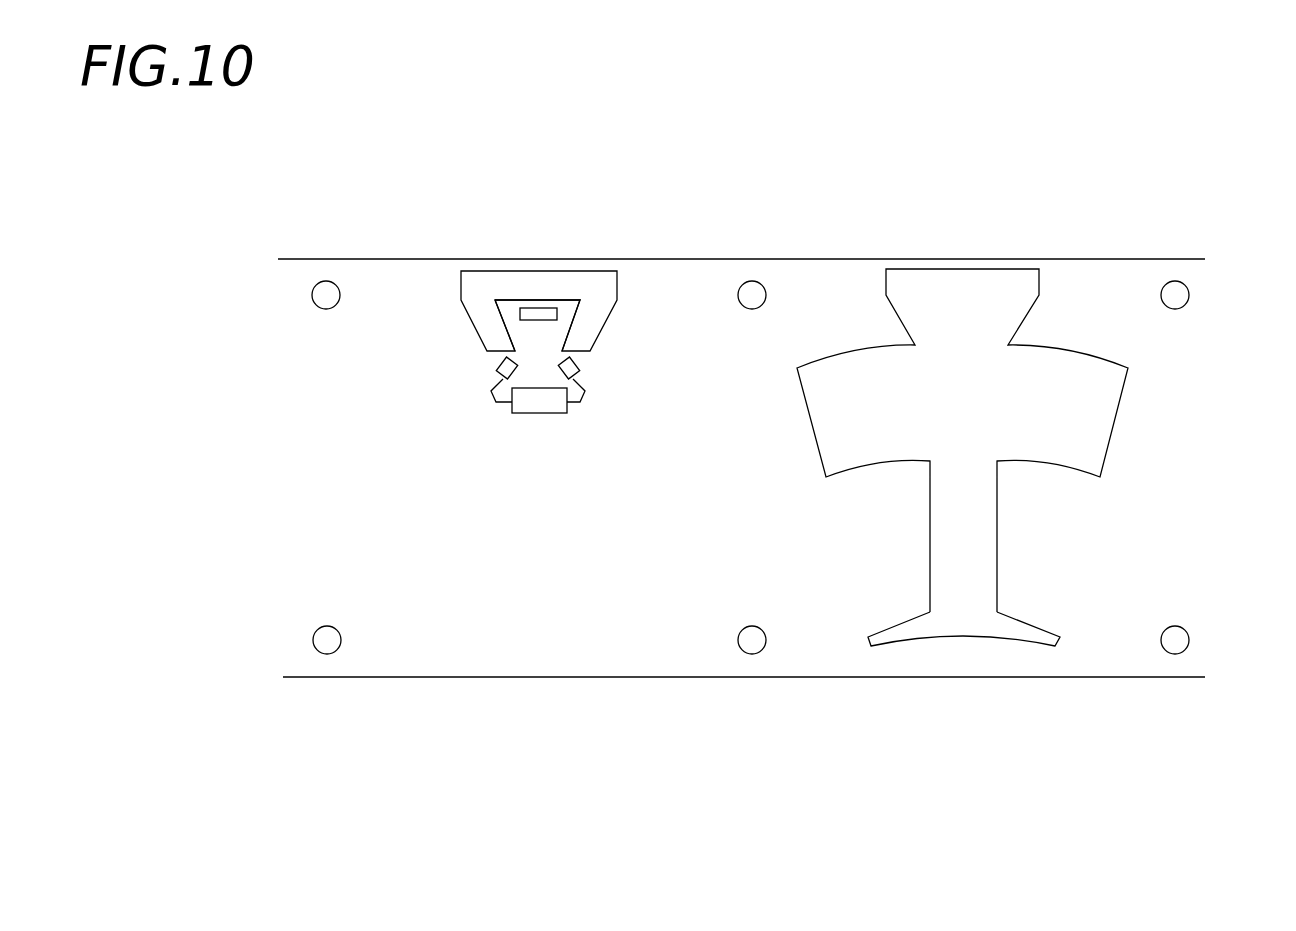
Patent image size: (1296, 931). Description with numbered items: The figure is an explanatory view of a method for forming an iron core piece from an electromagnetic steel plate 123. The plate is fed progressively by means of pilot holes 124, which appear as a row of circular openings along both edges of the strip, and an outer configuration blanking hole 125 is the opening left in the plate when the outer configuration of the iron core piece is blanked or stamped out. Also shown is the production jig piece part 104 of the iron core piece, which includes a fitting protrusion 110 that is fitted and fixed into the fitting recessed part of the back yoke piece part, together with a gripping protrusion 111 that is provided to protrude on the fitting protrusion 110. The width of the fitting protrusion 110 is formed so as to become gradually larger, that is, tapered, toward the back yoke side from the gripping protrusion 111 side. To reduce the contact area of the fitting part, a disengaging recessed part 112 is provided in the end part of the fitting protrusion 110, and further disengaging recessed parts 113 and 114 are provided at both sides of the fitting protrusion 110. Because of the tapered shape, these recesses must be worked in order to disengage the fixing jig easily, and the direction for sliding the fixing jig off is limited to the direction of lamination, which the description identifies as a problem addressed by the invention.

The production jig piece part 104 is at (557, 296).
The fitting protrusion 110 is at (530, 383).
The gripping protrusion 111 is at (565, 310).
The disengaging recessed part 112 is at (538, 389).
The disengaging recessed part 113 is at (493, 366).
The disengaging recessed part 114 is at (578, 371).
The electromagnetic steel plate 123 is at (1047, 257).
The pilot hole 124 is at (326, 281).
The outer configuration blanking hole 125 is at (963, 643).